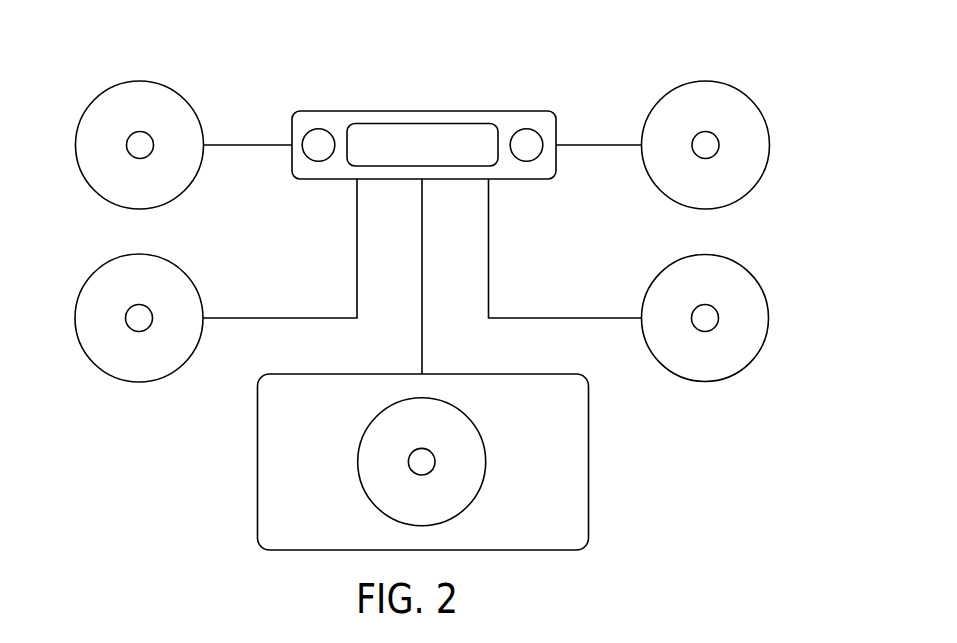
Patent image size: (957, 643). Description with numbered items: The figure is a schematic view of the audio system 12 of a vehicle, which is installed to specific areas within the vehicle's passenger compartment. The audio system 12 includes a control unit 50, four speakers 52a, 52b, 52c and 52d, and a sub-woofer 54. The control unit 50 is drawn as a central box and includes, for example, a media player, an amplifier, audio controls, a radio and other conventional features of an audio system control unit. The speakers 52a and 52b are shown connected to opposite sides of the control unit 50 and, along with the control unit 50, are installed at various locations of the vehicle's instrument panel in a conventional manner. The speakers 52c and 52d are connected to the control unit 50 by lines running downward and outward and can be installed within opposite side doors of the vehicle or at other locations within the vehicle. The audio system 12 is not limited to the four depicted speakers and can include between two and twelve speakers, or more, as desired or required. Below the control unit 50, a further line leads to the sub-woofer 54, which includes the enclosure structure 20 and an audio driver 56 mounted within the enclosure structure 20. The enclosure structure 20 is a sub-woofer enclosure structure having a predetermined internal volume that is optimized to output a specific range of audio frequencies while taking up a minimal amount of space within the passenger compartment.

The audio system 12 is at (480, 64).
The control unit 50 is at (333, 120).
The speaker 52a is at (193, 182).
The speaker 52b is at (757, 182).
The speaker 52c is at (82, 288).
The speaker 52d is at (648, 290).
The sub-woofer 54 is at (590, 436).
The enclosure structure 20 is at (590, 512).
The audio driver 56 is at (367, 493).